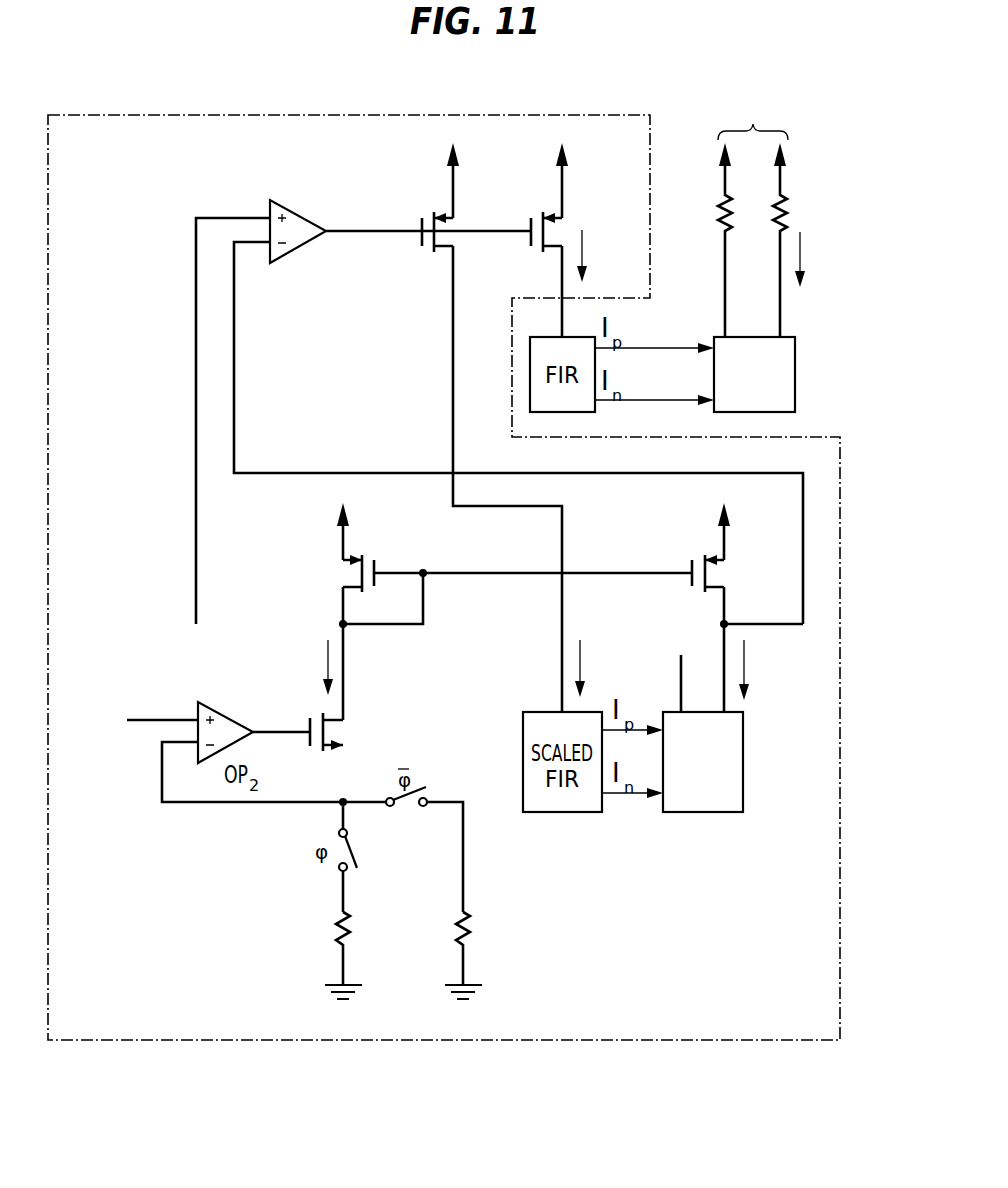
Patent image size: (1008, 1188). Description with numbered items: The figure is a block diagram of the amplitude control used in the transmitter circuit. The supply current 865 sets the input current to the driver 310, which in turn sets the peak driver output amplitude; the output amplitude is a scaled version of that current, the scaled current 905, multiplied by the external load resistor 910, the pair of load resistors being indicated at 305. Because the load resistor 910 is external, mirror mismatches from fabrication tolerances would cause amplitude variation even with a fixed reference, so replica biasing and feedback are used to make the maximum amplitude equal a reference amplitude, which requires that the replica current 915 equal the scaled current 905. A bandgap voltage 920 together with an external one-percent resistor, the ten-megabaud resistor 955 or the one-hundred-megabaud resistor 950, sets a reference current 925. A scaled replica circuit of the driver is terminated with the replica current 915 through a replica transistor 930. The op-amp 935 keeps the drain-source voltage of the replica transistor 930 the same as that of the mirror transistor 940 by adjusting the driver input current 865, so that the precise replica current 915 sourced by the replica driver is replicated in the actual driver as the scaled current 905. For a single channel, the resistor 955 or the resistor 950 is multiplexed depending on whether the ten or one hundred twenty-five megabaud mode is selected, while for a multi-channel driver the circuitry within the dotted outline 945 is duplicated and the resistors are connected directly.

The dotted outline 945 is at (253, 113).
The op-amp OP1 935 is at (312, 211).
The supply current ITN 865 is at (606, 227).
The load resistors 305 is at (787, 215).
The load resistor RL 910 is at (823, 198).
The scaled current λITN 905 is at (862, 274).
The driver 310 is at (797, 367).
The transistor M1 940 is at (346, 576).
The transistor MR 930 is at (733, 569).
The bandgap voltage VBG 920 is at (108, 700).
The reference current IREF 925 is at (266, 661).
The resistor R10 955 is at (332, 930).
The resistor R100 950 is at (453, 930).
The current KIREF 915 is at (777, 682).